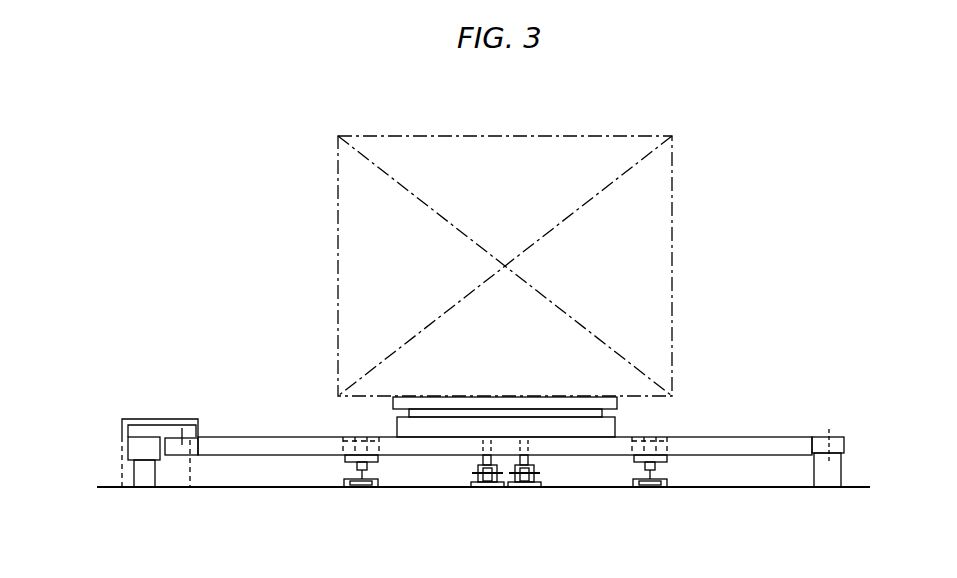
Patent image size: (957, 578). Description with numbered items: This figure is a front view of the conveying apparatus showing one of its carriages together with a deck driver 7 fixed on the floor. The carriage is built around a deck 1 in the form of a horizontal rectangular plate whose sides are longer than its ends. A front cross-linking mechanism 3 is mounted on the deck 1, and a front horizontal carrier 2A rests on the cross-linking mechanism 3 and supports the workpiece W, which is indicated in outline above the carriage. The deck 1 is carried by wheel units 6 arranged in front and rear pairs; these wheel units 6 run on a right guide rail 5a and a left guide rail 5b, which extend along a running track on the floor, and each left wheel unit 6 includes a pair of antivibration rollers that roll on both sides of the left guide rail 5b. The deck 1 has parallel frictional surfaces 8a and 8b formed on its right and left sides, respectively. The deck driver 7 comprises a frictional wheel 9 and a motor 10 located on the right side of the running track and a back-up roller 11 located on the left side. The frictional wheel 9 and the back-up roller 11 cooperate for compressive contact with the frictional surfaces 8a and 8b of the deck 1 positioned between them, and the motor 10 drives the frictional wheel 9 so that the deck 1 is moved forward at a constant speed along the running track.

The workpiece W is at (352, 202).
The deck 1 is at (753, 445).
The front horizontal carrier 2A is at (503, 402).
The front cross-linking mechanism 3 is at (576, 406).
The right guide rail 5a is at (366, 472).
The left guide rail 5b is at (666, 472).
The wheel unit 6 is at (353, 440).
The deck driver 7 is at (163, 412).
The frictional surface 8a is at (190, 450).
The frictional surface 8b is at (820, 433).
The frictional wheel 9 is at (170, 453).
The motor 10 is at (143, 473).
The back-up roller 11 is at (838, 433).